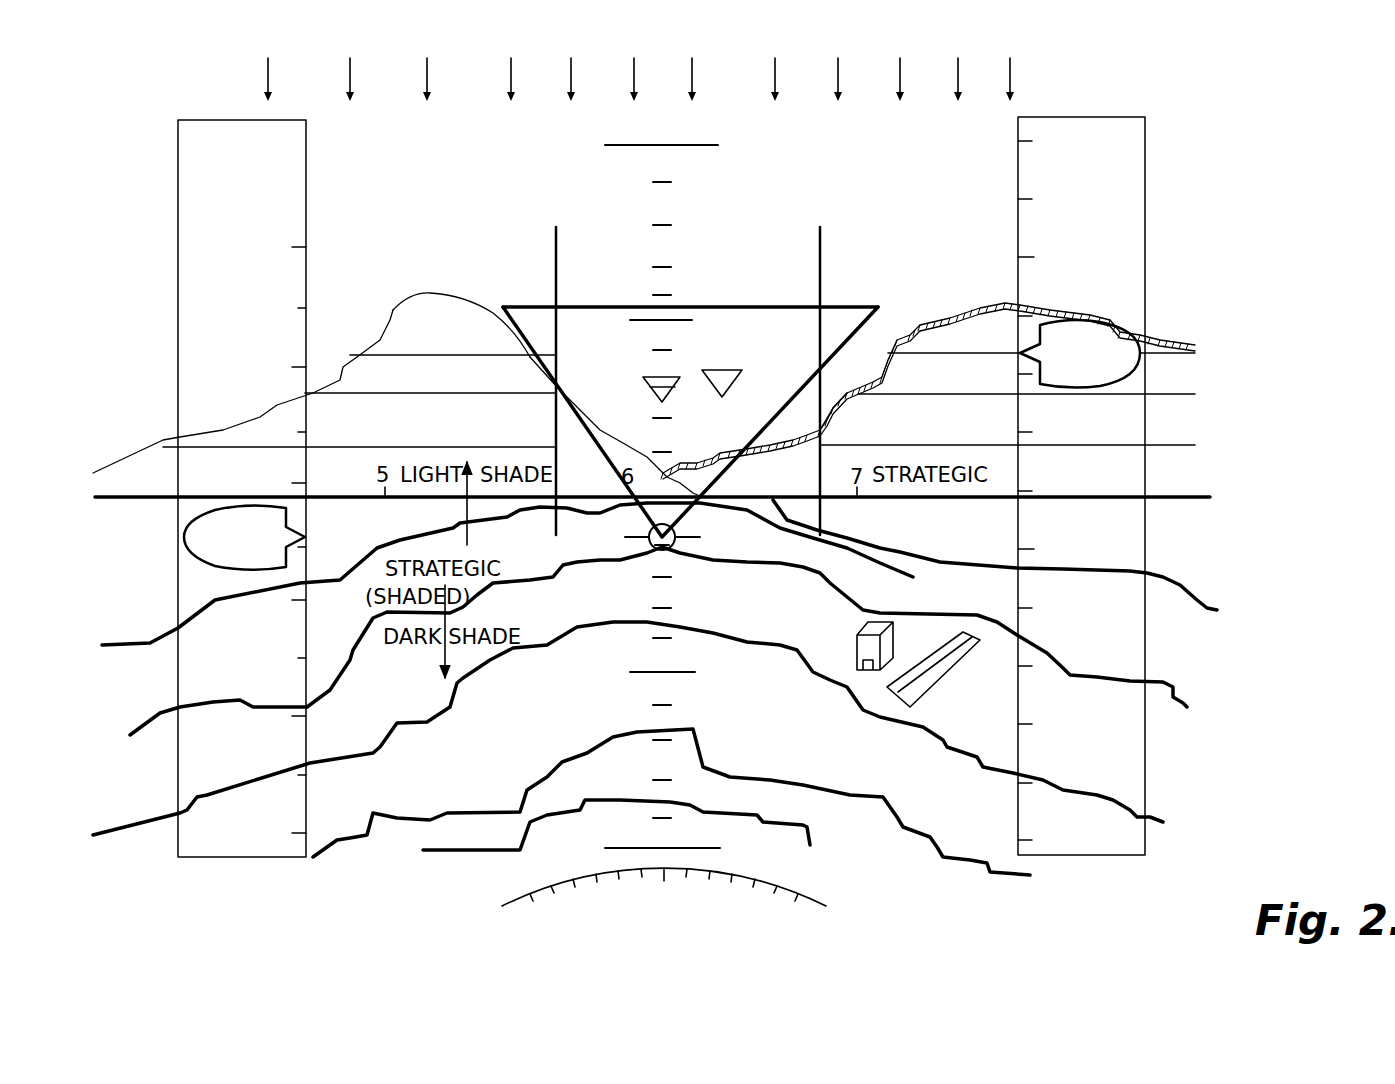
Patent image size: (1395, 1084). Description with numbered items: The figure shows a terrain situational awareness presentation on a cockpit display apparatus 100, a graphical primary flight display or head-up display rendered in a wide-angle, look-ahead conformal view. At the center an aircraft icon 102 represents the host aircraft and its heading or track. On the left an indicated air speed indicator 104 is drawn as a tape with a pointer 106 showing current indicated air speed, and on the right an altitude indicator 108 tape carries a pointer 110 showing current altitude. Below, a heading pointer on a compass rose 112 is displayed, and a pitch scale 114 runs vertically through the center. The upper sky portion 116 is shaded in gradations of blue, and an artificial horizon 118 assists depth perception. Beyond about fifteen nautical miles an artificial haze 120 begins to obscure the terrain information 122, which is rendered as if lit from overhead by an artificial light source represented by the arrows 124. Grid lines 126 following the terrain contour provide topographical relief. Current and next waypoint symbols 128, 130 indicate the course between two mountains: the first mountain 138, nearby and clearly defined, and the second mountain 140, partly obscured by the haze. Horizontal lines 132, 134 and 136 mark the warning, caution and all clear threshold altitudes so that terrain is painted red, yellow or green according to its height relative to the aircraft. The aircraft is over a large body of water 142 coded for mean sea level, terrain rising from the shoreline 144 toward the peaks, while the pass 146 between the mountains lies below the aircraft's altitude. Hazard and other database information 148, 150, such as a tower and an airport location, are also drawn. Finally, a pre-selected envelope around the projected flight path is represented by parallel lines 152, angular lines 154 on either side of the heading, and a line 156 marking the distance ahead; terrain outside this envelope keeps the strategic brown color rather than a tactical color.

The cockpit display apparatus 100 is at (1113, 81).
The aircraft icon 102 is at (698, 559).
The indicated air speed indicator 104 is at (199, 488).
The pointer 106 is at (202, 557).
The altitude indicator 108 is at (1126, 486).
The pointer 110 is at (1143, 356).
The compass rose 112 is at (740, 898).
The pitch scale 114 is at (687, 497).
The sky portion 116 is at (257, 308).
The artificial horizon 118 is at (679, 518).
The artificial haze 120 is at (790, 399).
The terrain information 122 is at (799, 436).
The arrows 124 is at (580, 79).
The grid lines 126 is at (678, 703).
The current waypoint symbol 128 is at (704, 369).
The next waypoint symbol 130 is at (709, 407).
The horizontal line 132 is at (811, 322).
The horizontal line 134 is at (785, 365).
The horizontal line 136 is at (714, 441).
The first mountain 138 is at (443, 282).
The second mountain 140 is at (1047, 288).
The body of water 142 is at (671, 802).
The shoreline 144 is at (628, 728).
The pass 146 is at (616, 414).
The hazard information 148 is at (837, 681).
The other useful information 150 is at (954, 682).
The parallel lines 152 is at (692, 367).
The angular lines 154 is at (714, 401).
The line 156 is at (678, 272).